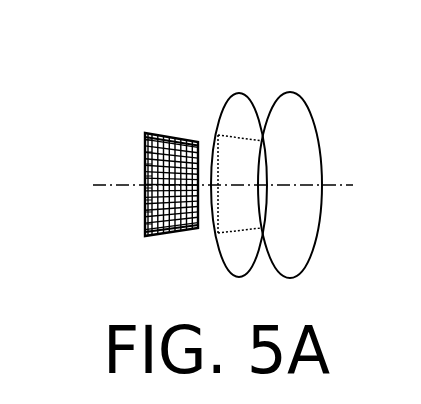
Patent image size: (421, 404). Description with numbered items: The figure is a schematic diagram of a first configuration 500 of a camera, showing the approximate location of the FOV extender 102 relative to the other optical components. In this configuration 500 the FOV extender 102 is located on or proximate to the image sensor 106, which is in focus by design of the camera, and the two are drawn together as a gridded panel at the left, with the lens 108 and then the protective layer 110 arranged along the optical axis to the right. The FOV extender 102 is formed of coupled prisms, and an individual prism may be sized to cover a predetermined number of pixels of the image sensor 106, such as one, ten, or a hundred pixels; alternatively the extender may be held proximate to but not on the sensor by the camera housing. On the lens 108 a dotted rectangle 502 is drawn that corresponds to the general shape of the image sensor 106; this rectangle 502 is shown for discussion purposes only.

The first configuration 500 is at (129, 39).
The FOV extender 102 is at (135, 167).
The image sensor 106 is at (161, 128).
The lens 108 is at (232, 102).
The protective layer 110 is at (290, 93).
The rectangle 502 is at (238, 232).